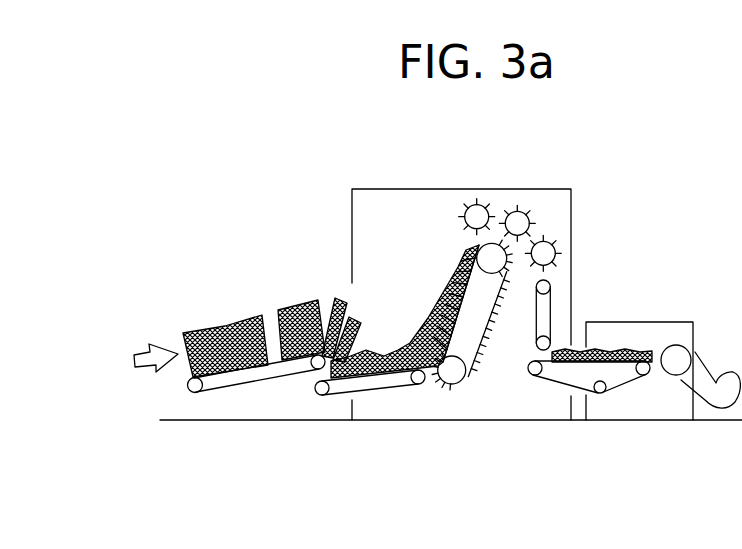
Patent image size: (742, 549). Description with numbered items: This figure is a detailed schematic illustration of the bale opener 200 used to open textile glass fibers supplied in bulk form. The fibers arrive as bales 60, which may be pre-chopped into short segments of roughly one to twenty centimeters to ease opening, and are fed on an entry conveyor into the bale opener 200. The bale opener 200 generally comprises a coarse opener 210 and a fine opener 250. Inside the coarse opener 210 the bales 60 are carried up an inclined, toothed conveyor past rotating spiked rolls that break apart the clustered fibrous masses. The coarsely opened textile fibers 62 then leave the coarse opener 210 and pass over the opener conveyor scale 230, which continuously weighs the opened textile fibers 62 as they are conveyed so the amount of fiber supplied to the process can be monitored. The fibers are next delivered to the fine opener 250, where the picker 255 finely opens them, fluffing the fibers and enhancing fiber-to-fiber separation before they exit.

The bale opener 200 is at (545, 146).
The coarse opener 210 is at (397, 189).
The bales 60 is at (292, 303).
The opened textile fibers 62 is at (613, 347).
The opener conveyor scale 230 is at (558, 384).
The fine opener 250 is at (642, 322).
The picker 255 is at (676, 355).